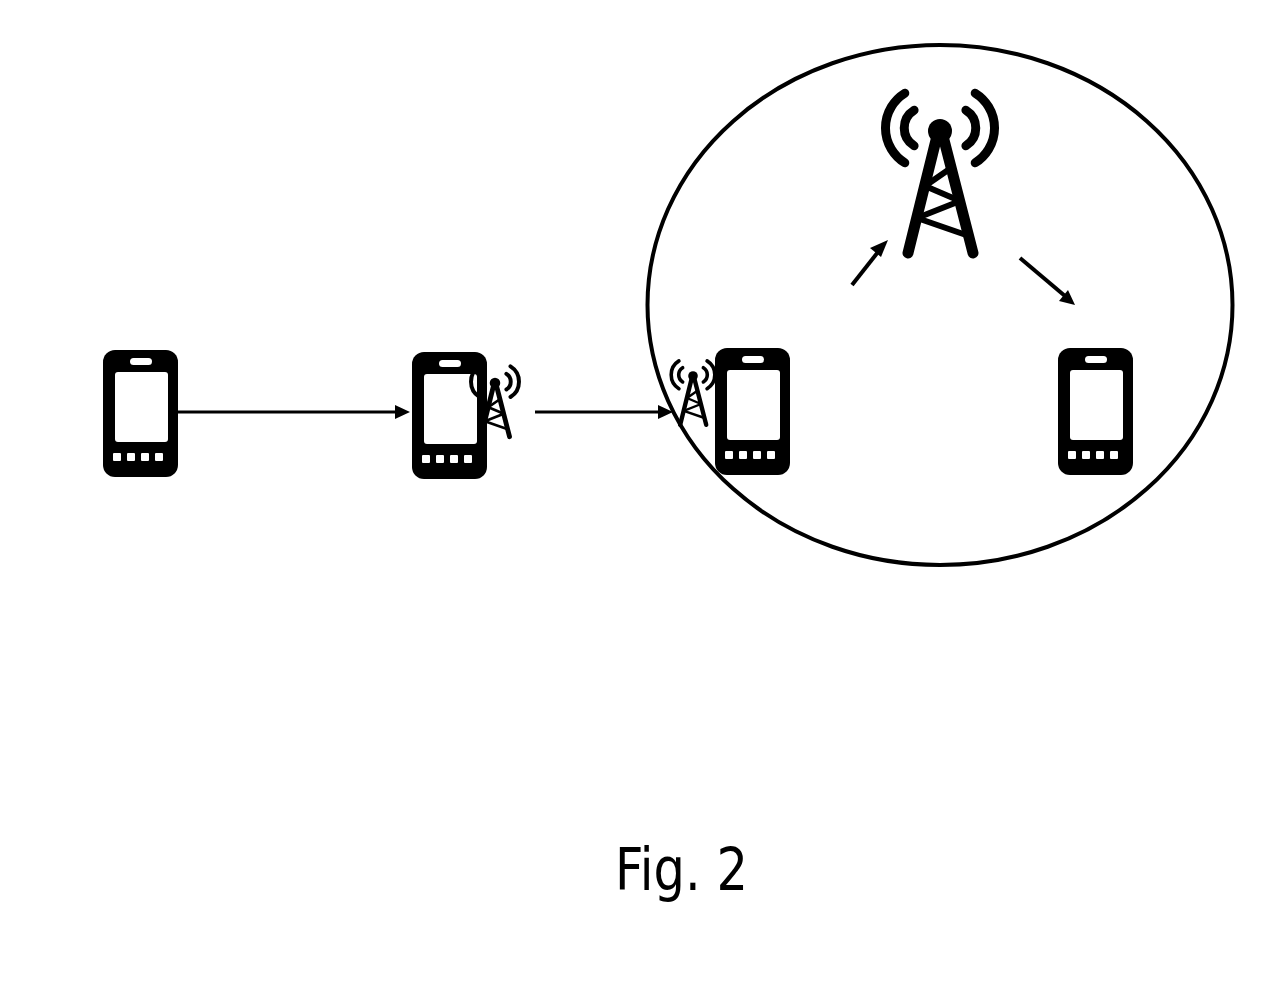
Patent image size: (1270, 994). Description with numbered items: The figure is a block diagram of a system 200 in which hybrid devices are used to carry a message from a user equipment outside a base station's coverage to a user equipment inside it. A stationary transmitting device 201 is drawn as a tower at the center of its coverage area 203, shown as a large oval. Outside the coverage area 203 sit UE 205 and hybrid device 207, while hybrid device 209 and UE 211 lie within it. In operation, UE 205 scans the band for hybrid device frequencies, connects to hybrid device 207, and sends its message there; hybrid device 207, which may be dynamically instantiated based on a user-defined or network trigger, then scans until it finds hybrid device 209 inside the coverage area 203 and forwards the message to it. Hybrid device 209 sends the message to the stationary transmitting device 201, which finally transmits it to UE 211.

The system 200 is at (383, 162).
The stationary transmitting device 201 is at (897, 222).
The coverage area 203 is at (690, 165).
The UE 205 is at (179, 381).
The hybrid device 207 is at (411, 385).
The hybrid device 209 is at (793, 383).
The UE 211 is at (1135, 373).